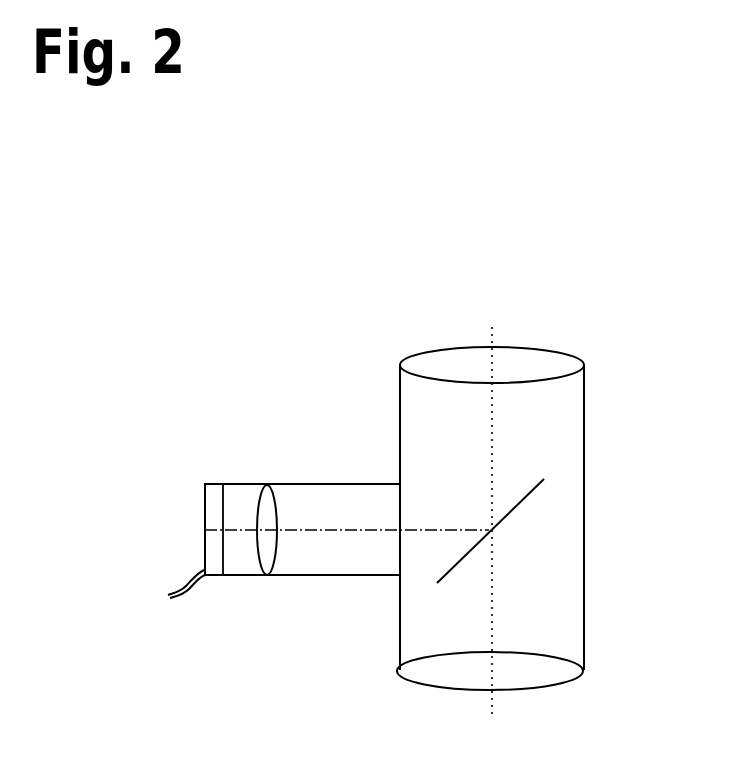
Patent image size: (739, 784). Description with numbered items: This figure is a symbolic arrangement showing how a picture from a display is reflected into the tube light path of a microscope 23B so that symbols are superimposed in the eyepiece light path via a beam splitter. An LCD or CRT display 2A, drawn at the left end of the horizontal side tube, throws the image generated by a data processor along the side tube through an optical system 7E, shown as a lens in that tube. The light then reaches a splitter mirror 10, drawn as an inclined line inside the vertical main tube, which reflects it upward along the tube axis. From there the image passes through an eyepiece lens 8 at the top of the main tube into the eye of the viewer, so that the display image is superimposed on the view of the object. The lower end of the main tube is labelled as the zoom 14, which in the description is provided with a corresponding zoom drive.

The LCD or CRT display 2A is at (211, 481).
The optical system 7E is at (287, 508).
The eyepiece lens 8 is at (551, 351).
The splitter mirror 10 is at (513, 511).
The microscope 23B is at (586, 590).
The zoom 14 is at (544, 654).